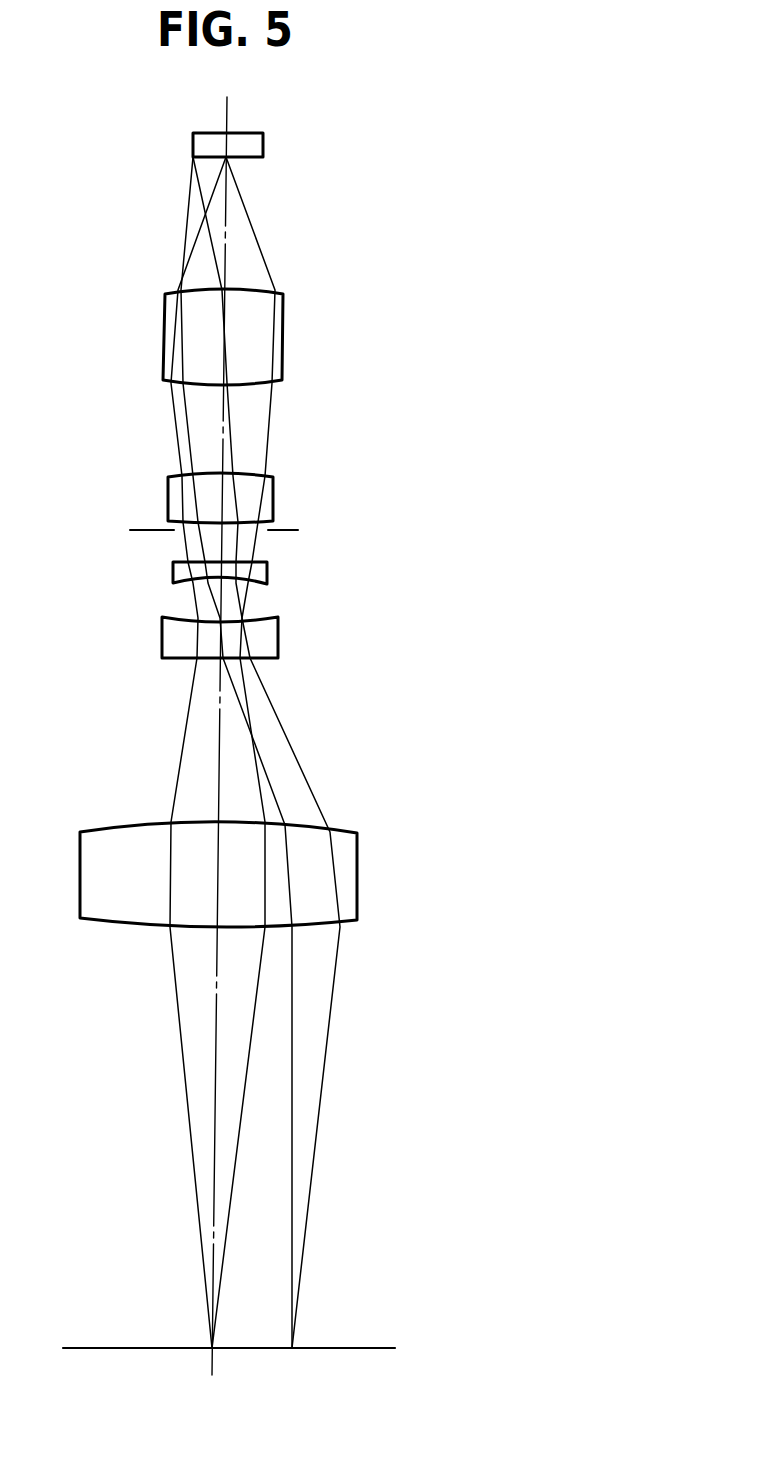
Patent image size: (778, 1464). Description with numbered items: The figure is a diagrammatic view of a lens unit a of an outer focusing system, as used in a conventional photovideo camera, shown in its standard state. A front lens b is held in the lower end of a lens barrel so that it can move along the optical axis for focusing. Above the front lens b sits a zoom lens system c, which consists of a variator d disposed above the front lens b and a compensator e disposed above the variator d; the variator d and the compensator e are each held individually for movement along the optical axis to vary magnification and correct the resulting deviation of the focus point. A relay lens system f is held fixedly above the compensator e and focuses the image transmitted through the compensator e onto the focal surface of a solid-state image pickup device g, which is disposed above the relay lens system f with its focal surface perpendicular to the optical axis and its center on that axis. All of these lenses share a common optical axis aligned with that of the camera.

The lens unit a is at (274, 730).
The front lens b is at (345, 878).
The zoom lens system c is at (285, 608).
The variator d is at (263, 637).
The compensator e is at (258, 573).
The relay lens system f is at (322, 303).
The solid-state image pickup device g is at (257, 143).